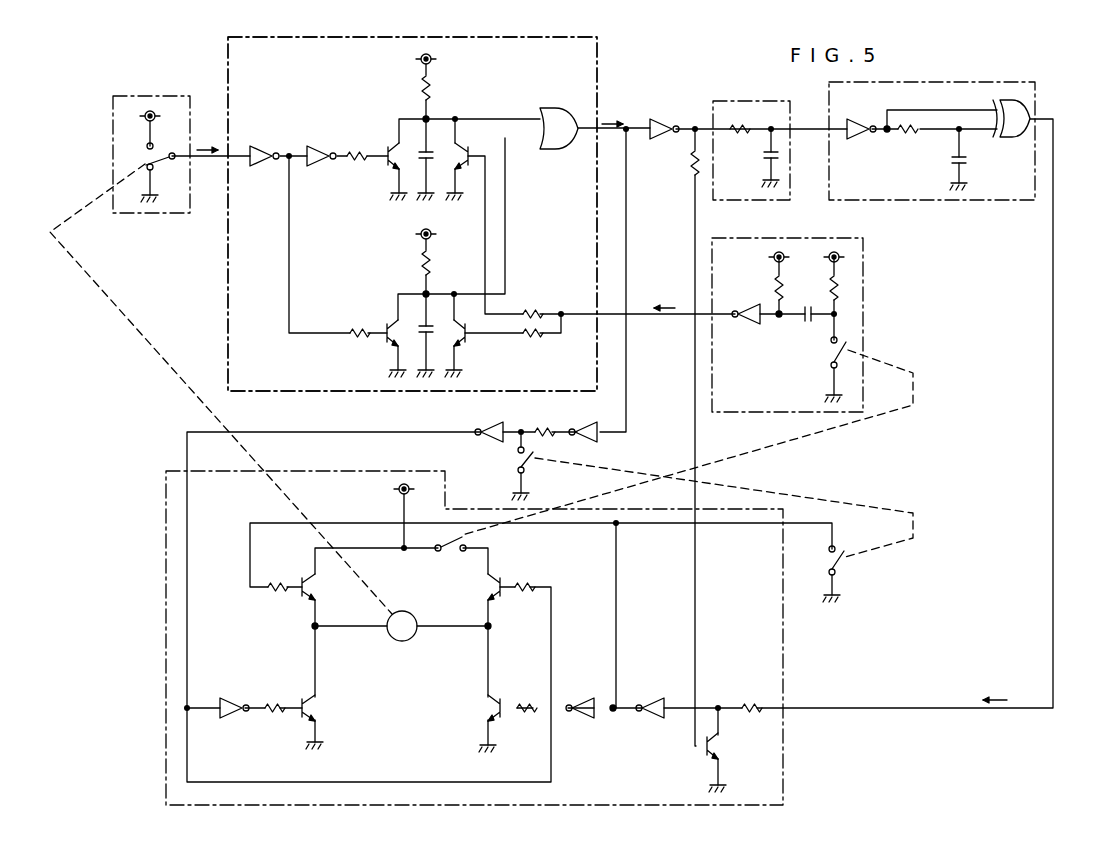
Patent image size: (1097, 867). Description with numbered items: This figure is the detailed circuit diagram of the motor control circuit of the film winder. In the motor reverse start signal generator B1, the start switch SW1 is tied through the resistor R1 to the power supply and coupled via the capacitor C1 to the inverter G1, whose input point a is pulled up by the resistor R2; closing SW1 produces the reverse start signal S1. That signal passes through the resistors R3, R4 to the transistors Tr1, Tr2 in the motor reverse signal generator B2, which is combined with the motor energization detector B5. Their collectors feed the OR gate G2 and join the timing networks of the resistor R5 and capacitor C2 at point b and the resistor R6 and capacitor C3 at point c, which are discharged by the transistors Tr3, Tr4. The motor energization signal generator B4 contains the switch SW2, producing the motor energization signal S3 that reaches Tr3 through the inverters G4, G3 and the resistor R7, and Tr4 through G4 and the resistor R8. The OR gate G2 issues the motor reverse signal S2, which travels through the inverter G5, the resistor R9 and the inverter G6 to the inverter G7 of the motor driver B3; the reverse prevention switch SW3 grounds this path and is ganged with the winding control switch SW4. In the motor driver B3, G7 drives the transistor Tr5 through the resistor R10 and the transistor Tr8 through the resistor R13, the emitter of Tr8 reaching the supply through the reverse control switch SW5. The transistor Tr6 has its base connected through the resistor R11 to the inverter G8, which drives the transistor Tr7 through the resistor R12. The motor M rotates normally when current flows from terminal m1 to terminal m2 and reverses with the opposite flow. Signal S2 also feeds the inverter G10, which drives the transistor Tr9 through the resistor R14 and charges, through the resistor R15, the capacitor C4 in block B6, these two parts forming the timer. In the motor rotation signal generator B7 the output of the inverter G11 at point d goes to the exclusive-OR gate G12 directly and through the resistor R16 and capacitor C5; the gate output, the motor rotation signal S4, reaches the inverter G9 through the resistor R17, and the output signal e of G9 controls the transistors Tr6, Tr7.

The motor reverse start signal generator B1 is at (866, 260).
The motor reverse signal generator B2 is at (228, 252).
The motor driver B3 is at (166, 592).
The motor energization signal generator B4 is at (167, 96).
The motor energization detector B5 is at (412, 214).
The delay block B6 is at (762, 101).
The motor rotation signal generator B7 is at (973, 82).
The start switch SW1 is at (830, 360).
The motor energization signal generating switch SW2 is at (157, 168).
The reverse prevention switch SW3 is at (528, 466).
The winding control switch SW4 is at (840, 565).
The reverse control switch SW5 is at (440, 552).
The reverse start signal S1 is at (666, 297).
The motor reverse signal S2 is at (612, 114).
The motor energization signal S3 is at (207, 140).
The motor rotation signal S4 is at (997, 690).
The inverter G1 is at (748, 323).
The OR gate G2 is at (566, 118).
The inverter G3 is at (319, 146).
The inverter G4 is at (262, 146).
The inverter G5 is at (598, 436).
The inverter G6 is at (491, 427).
The inverter G7 is at (233, 697).
The inverter G8 is at (578, 697).
The inverter G9 is at (643, 697).
The inverter G10 is at (662, 119).
The inverter G11 is at (858, 119).
The exclusive-OR gate G12 is at (1033, 108).
The resistor R1 is at (840, 282).
The resistor R2 is at (783, 288).
The resistor R3 is at (530, 310).
The resistor R4 is at (536, 338).
The resistor R5 is at (420, 90).
The resistor R6 is at (420, 264).
The resistor R7 is at (357, 160).
The resistor R8 is at (354, 347).
The resistor R9 is at (545, 427).
The resistor R10 is at (273, 697).
The resistor R11 is at (278, 581).
The resistor R12 is at (522, 697).
The resistor R13 is at (523, 580).
The resistor R14 is at (690, 164).
The resistor R15 is at (739, 134).
The resistor R16 is at (911, 136).
The resistor R17 is at (748, 697).
The capacitor C1 is at (806, 322).
The capacitor C2 is at (434, 157).
The capacitor C3 is at (434, 334).
The capacitor C4 is at (782, 157).
The capacitor C5 is at (967, 162).
The NPN transistor Tr1 is at (461, 150).
The NPN transistor Tr2 is at (465, 339).
The NPN transistor Tr3 is at (386, 146).
The NPN transistor Tr4 is at (386, 325).
The NPN transistor Tr5 is at (318, 710).
The PNP transistor Tr6 is at (318, 592).
The NPN transistor Tr7 is at (490, 708).
The PNP transistor Tr8 is at (478, 590).
The NPN transistor Tr9 is at (720, 748).
The point a is at (777, 320).
The point b is at (428, 116).
The point c is at (428, 292).
The node d is at (884, 136).
The output signal e is at (613, 712).
The motor terminal m1 is at (297, 632).
The motor terminal m2 is at (501, 632).
The motor M is at (402, 626).